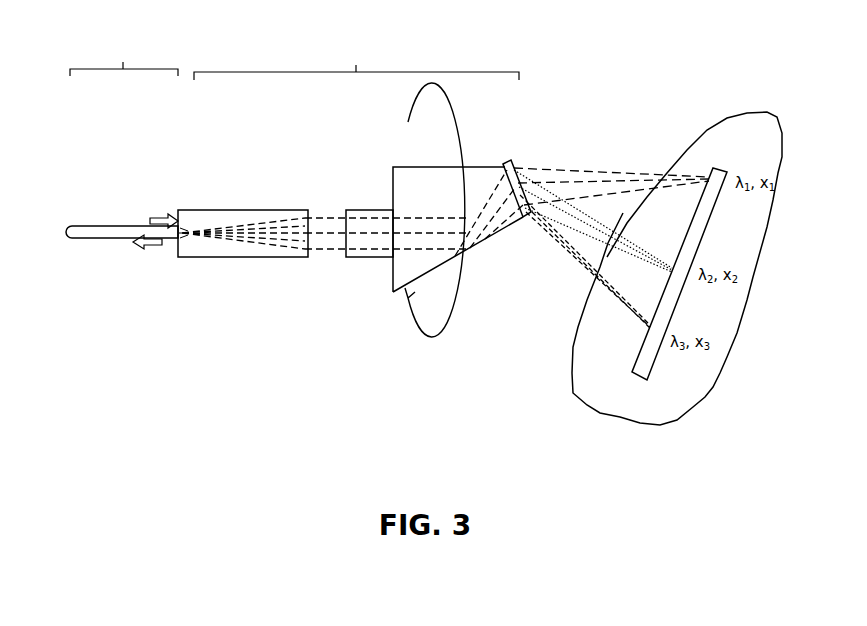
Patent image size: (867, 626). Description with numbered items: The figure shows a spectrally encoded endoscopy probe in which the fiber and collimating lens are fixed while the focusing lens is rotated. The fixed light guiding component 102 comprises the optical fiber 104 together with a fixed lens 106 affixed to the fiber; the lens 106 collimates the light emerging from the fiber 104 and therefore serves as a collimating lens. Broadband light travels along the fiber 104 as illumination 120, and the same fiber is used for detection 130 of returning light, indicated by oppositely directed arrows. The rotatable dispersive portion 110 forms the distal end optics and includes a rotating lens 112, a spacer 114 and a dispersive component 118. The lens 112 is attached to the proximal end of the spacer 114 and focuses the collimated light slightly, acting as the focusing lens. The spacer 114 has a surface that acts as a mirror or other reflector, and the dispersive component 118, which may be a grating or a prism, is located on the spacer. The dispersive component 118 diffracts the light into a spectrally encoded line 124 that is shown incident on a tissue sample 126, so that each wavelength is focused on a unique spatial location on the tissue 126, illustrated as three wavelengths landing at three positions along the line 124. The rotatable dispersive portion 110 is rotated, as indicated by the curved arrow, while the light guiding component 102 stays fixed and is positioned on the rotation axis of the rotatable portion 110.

The light guiding component 102 is at (124, 51).
The optical fiber 104 is at (105, 225).
The fixed lens 106 is at (243, 222).
The rotatable dispersive portion 110 is at (356, 58).
The focusing lens 112 is at (364, 222).
The spacer 114 is at (437, 210).
The dispersive component 118 is at (512, 170).
The illumination 120 is at (159, 207).
The spectrally encoded line 124 is at (640, 345).
The tissue sample 126 is at (677, 258).
The detection 130 is at (149, 258).